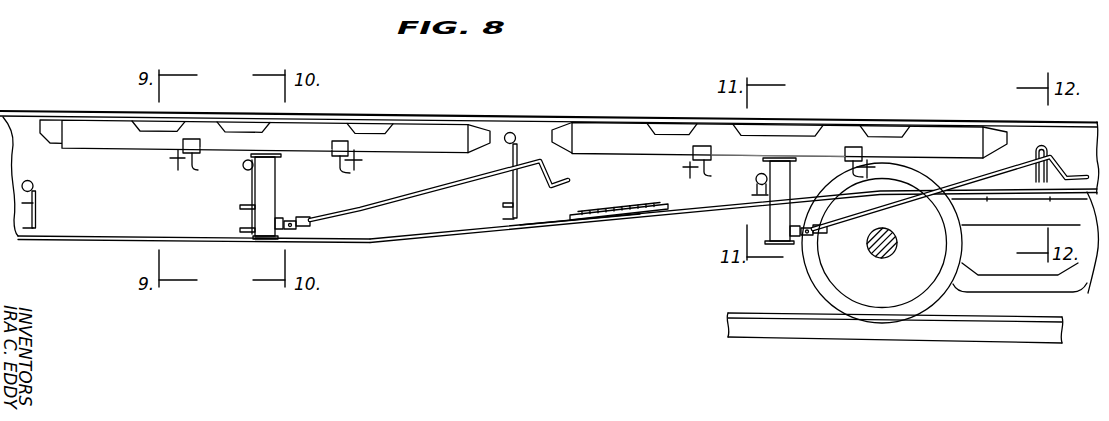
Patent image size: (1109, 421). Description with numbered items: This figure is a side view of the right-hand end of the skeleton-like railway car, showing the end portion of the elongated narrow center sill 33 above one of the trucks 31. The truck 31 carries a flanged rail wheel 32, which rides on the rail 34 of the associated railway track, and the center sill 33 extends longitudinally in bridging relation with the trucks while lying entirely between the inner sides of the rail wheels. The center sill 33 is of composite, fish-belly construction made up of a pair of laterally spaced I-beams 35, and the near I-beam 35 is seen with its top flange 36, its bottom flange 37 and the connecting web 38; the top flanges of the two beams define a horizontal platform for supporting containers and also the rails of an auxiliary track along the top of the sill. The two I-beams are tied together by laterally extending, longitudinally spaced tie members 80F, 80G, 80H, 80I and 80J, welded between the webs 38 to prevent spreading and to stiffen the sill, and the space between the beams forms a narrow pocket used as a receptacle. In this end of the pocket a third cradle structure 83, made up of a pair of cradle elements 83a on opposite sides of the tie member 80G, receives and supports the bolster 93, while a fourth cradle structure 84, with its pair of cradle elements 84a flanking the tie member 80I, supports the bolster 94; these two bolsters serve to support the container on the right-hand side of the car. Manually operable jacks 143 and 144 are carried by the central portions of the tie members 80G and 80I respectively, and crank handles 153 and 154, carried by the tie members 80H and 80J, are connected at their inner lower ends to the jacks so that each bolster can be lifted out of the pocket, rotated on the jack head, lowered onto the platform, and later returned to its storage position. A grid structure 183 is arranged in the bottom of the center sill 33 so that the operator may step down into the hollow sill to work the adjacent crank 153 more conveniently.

The truck 31 is at (998, 283).
The rail wheel 32 is at (820, 282).
The center sill 33 is at (588, 255).
The rail 34 is at (791, 333).
The I-beam 35 is at (485, 240).
The top flange 36 is at (20, 111).
The bottom flange 37 is at (41, 241).
The web 38 is at (128, 194).
The tie member 80F is at (38, 209).
The tie member 80G is at (254, 191).
The tie member 80H is at (512, 188).
The tie member 80I is at (753, 192).
The tie member 80J is at (1050, 149).
The cradle structure 83 is at (298, 166).
The cradle element 83a is at (199, 170).
The cradle structure 84 is at (806, 162).
The cradle element 84a is at (708, 175).
The bolster 93 is at (442, 143).
The bolster 94 is at (958, 148).
The jack 143 is at (252, 240).
The jack 144 is at (777, 216).
The crank handle 153 is at (380, 202).
The crank handle 154 is at (902, 200).
The grid structure 183 is at (628, 214).